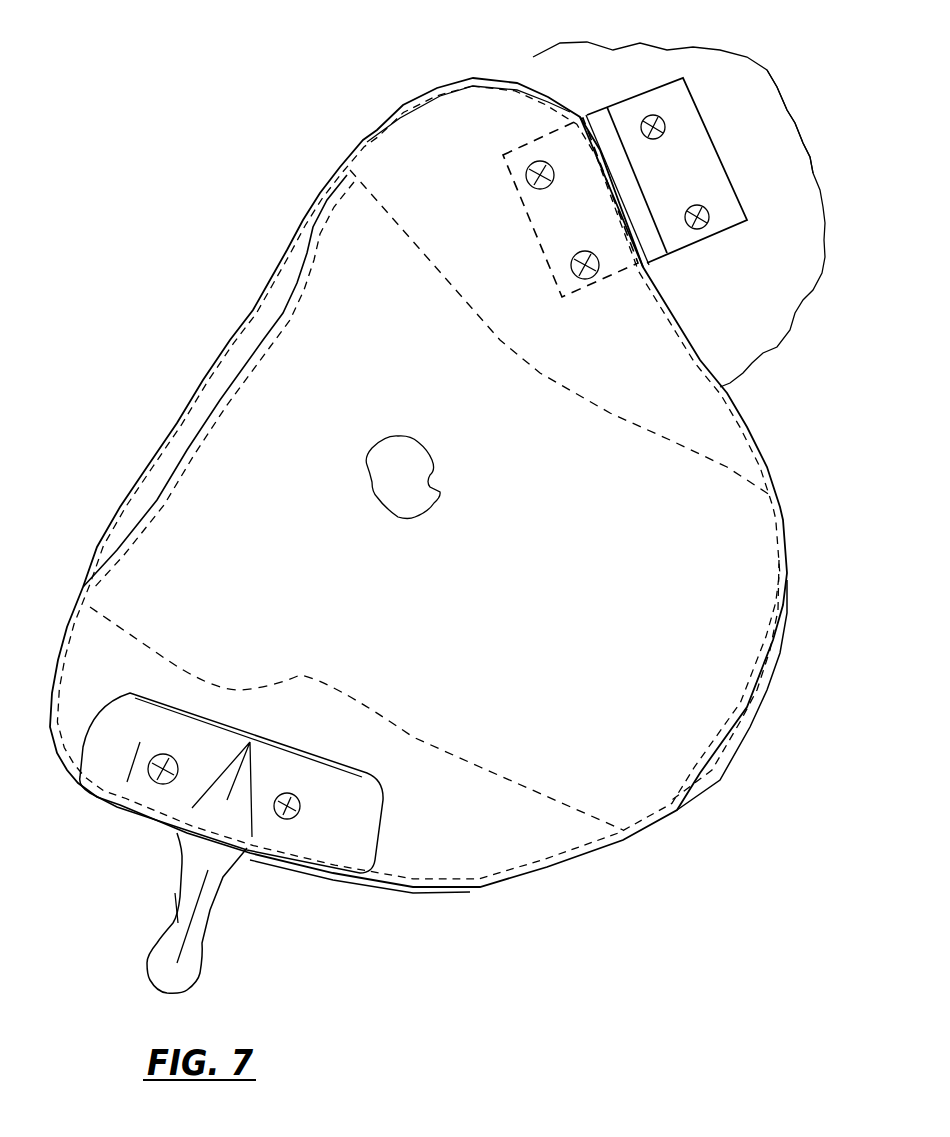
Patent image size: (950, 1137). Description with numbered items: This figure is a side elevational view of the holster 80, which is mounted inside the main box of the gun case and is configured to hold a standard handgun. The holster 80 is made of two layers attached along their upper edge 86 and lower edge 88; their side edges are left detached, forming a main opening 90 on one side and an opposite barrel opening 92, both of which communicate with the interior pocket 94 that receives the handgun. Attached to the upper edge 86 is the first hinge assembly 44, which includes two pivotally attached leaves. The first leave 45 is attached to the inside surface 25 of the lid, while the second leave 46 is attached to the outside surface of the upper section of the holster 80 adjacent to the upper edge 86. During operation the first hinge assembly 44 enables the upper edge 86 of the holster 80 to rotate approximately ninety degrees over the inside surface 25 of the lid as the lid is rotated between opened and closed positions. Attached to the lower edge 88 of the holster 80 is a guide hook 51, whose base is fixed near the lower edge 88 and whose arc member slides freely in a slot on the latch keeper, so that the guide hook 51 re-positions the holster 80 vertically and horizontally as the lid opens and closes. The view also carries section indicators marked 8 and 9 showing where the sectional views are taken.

The holster 80 is at (260, 140).
The main opening 90 is at (233, 357).
The barrel opening 92 is at (743, 712).
The lower edge 88 is at (410, 892).
The first hinge assembly 44 is at (647, 67).
The inside surface 25 is at (757, 90).
The first leave 45 is at (683, 113).
The upper edge 86 is at (580, 117).
The second leave 46 is at (503, 155).
The interior pocket 94 is at (397, 450).
The guide hook 51 is at (106, 782).
The section line 8- 8 is at (623, 327).
The section line 9- 9 is at (163, 670).